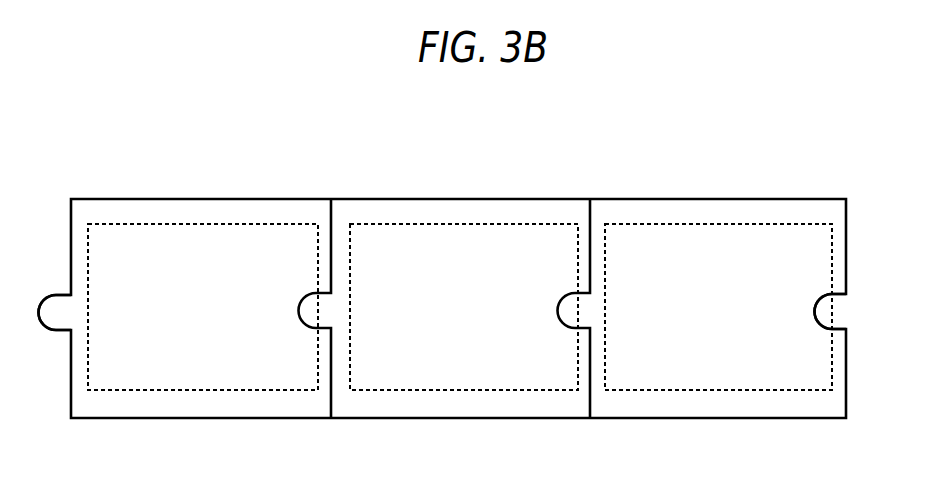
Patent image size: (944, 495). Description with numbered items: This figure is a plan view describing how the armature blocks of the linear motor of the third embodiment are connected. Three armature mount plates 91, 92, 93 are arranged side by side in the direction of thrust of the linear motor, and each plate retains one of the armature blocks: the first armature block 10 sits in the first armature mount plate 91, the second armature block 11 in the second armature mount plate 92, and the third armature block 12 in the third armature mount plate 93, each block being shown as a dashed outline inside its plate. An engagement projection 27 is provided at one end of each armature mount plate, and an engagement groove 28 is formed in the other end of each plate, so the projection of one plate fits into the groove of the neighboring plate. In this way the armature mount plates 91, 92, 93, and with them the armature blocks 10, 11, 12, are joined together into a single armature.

The armature mount plate 91 is at (199, 206).
The armature mount plate 92 is at (468, 206).
The armature mount plate 93 is at (729, 206).
The first armature block 10 is at (197, 380).
The second armature block 11 is at (464, 380).
The third armature block 12 is at (726, 380).
The engagement projection 27 is at (52, 302).
The engagement groove 28 is at (817, 312).